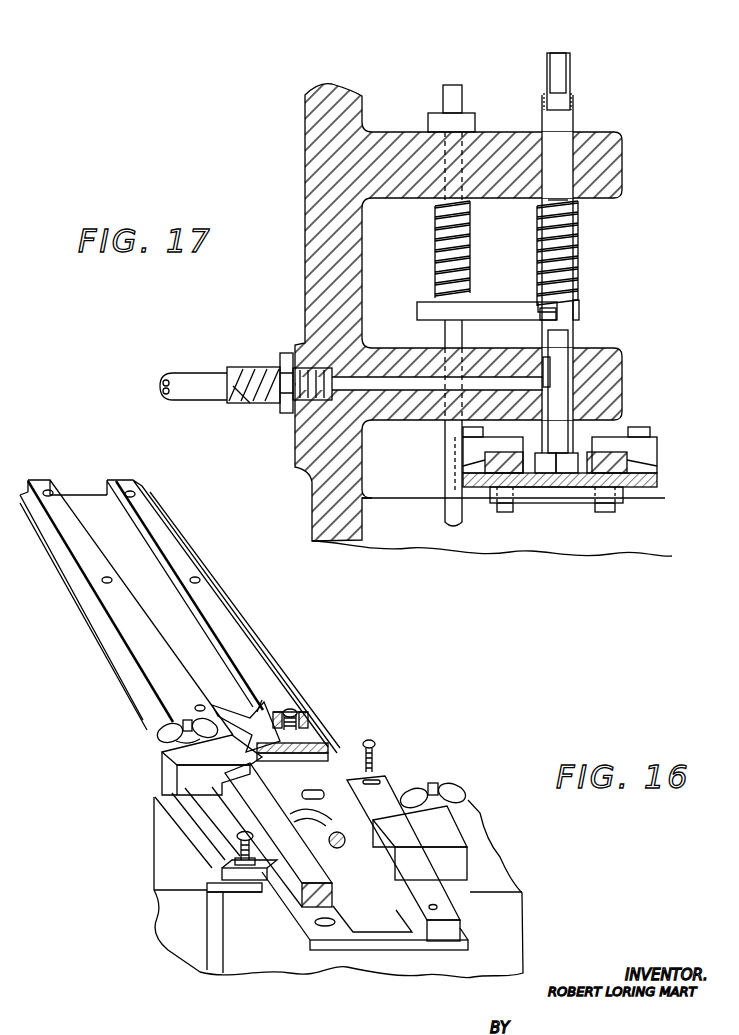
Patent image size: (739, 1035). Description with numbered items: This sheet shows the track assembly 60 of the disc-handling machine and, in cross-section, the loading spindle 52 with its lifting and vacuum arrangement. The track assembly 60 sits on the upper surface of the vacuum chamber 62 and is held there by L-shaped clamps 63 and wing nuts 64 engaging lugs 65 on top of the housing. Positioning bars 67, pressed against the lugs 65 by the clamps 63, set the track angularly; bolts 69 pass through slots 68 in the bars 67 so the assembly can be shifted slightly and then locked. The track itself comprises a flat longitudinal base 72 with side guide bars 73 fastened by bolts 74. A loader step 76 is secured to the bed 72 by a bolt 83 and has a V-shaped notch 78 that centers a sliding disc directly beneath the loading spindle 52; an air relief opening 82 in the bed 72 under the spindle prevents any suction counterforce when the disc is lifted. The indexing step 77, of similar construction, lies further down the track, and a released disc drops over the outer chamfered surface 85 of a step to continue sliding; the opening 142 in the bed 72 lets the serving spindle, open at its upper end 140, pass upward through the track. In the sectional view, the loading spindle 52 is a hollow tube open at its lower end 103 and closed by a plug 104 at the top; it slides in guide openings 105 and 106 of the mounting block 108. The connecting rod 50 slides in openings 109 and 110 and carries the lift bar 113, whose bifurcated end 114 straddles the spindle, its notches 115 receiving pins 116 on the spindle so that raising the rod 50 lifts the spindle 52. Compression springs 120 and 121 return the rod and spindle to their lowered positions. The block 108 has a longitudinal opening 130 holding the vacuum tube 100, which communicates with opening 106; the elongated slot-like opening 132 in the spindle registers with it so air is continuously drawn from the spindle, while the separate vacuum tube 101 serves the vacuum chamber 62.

In FIG. 17, the connecting rod 50 is at (455, 88).
In FIG. 17, the loading spindle 52 is at (572, 126).
In FIG. 16, the track assembly 60 is at (142, 736).
In FIG. 16, the vacuum chamber 62 is at (500, 860).
In FIG. 16, the L-shaped clamp 63 is at (170, 752).
In FIG. 16, the wing nut 64 is at (178, 722).
In FIG. 16, the lug 65 is at (158, 796).
In FIG. 16, the positioning bar 67 is at (205, 838).
In FIG. 16, the slot 68 is at (236, 860).
In FIG. 16, the bolt 69 is at (238, 834).
In FIG. 16, the longitudinal base 72 is at (92, 497).
In FIG. 16, the side guide bar 73 is at (167, 530).
In FIG. 16, the bolt 74 is at (300, 712).
In FIG. 16, the loader step 76 is at (268, 712).
In FIG. 16, the indexing step 77 is at (391, 928).
In FIG. 16, the V-shaped notch 78 is at (257, 712).
In FIG. 16, the air relief opening 82 is at (245, 716).
In FIG. 16, the bolt 83 is at (328, 843).
In FIG. 16, the outer chamfered surface 85 is at (357, 922).
In FIG. 17, the air vacuum tube 100 is at (208, 377).
In FIG. 17, the air vacuum tube 101 is at (262, 402).
In FIG. 17, the lower end opening 103 is at (566, 421).
In FIG. 17, the plug 104 is at (553, 57).
In FIG. 17, the guide opening 105 is at (563, 190).
In FIG. 17, the guide opening 106 is at (573, 352).
In FIG. 17, the mounting block 108 is at (614, 358).
In FIG. 17, the opening 109 is at (446, 418).
In FIG. 17, the opening 110 is at (447, 188).
In FIG. 17, the lift bar 113 is at (430, 318).
In FIG. 17, the bifurcated end 114 is at (579, 316).
In FIG. 17, the notch 115 is at (538, 303).
In FIG. 17, the pin 116 is at (540, 319).
In FIG. 17, the compression spring 120 is at (438, 273).
In FIG. 17, the compression spring 121 is at (538, 246).
In FIG. 17, the longitudinal opening 130 is at (494, 396).
In FIG. 17, the elongated slot-like opening 132 is at (548, 372).
In FIG. 16, the upper end opening 140 is at (301, 815).
In FIG. 16, the opening 142 is at (315, 786).